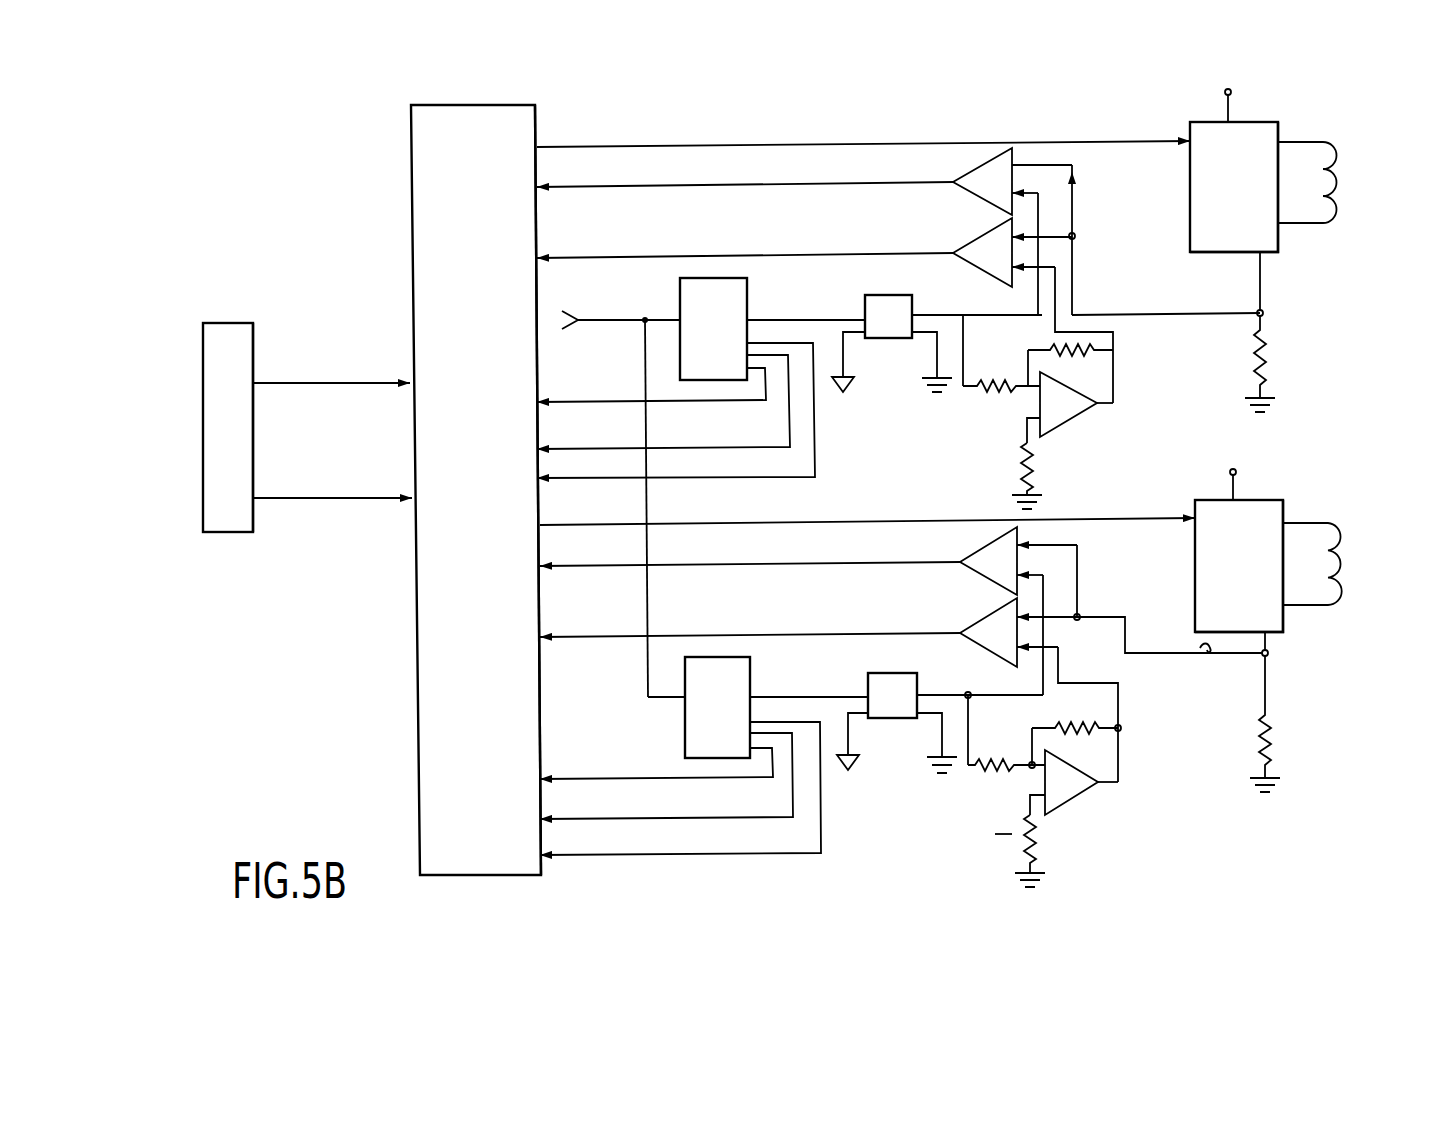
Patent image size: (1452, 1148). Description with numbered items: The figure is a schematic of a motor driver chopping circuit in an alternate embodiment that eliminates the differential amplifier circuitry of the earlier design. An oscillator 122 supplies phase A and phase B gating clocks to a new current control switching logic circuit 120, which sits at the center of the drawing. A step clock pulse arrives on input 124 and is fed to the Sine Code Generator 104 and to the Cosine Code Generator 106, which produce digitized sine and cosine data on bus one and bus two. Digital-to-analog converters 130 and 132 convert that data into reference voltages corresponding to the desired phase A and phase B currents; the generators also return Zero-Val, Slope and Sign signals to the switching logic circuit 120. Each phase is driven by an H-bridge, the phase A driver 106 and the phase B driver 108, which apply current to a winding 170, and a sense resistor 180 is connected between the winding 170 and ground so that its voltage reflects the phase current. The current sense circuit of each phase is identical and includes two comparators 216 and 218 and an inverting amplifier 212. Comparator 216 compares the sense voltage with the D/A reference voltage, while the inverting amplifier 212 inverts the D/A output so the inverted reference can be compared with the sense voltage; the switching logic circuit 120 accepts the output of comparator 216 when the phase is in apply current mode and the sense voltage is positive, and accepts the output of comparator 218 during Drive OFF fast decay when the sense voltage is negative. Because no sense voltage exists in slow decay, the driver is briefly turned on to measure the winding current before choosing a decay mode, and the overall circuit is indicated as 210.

The Sine Code Generator 104 is at (708, 278).
The Cosine Code Generator 106 is at (1280, 123).
The phase B driver 108 is at (1284, 500).
The current control switching logic circuit 120 is at (486, 748).
The oscillator 122 is at (228, 532).
The input 124 is at (620, 316).
The digital-to-analog converter 130 is at (880, 340).
The digital-to-analog converter 132 is at (890, 718).
The winding 170 is at (1333, 205).
The sense resistor 180 is at (1254, 351).
The current control circuit 210 is at (375, 674).
The inverting amplifier 212 is at (1070, 416).
The comparator 216 is at (975, 170).
The comparator 218 is at (975, 242).